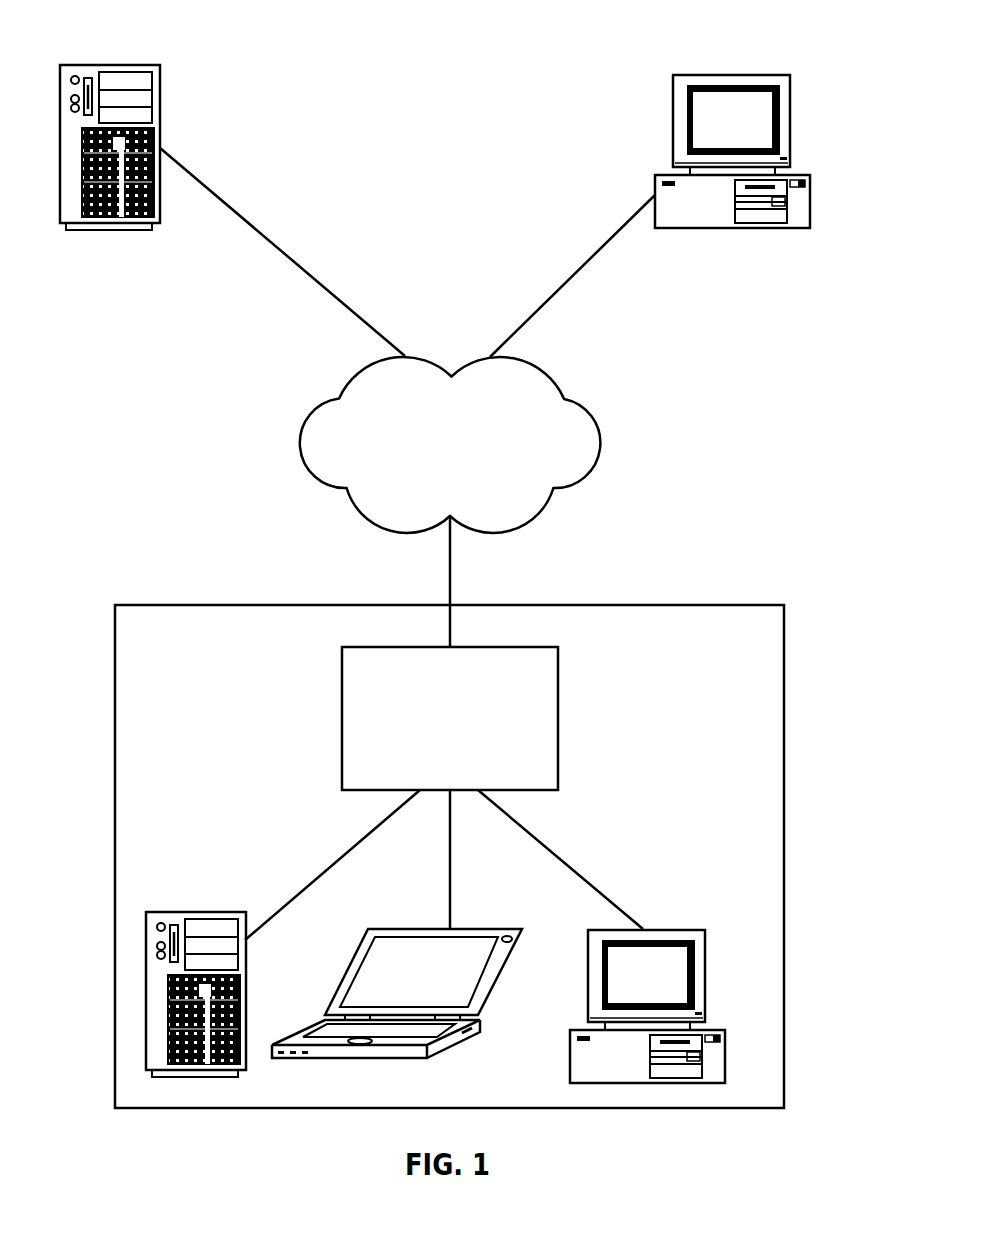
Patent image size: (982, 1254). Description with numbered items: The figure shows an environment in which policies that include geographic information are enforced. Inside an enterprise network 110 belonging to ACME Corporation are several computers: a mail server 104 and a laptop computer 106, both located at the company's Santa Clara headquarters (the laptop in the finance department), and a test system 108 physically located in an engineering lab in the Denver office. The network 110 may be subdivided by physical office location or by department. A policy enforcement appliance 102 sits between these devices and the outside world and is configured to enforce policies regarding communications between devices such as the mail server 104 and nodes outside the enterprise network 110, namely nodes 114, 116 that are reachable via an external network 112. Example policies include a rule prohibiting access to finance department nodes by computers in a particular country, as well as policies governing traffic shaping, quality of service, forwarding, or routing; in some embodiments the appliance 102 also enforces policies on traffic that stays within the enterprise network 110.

The policy enforcement appliance 102 is at (558, 697).
The mail server 104 is at (197, 912).
The laptop computer 106 is at (447, 929).
The test system 108 is at (647, 929).
The enterprise network 110 is at (703, 605).
The external network 112 is at (598, 443).
The node 114 is at (113, 65).
The node 116 is at (735, 75).